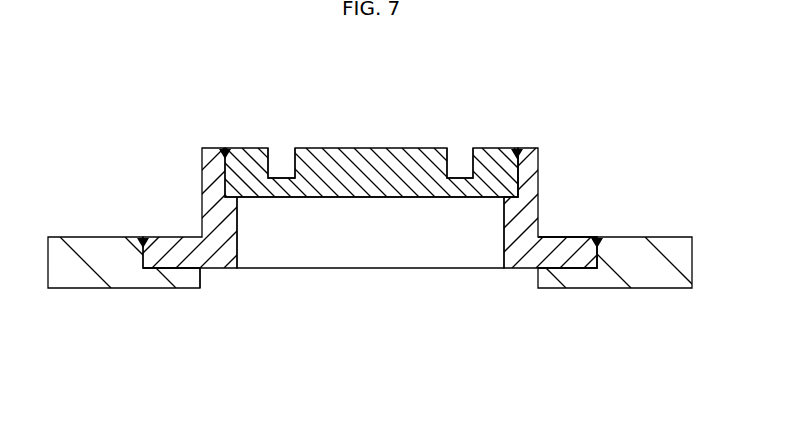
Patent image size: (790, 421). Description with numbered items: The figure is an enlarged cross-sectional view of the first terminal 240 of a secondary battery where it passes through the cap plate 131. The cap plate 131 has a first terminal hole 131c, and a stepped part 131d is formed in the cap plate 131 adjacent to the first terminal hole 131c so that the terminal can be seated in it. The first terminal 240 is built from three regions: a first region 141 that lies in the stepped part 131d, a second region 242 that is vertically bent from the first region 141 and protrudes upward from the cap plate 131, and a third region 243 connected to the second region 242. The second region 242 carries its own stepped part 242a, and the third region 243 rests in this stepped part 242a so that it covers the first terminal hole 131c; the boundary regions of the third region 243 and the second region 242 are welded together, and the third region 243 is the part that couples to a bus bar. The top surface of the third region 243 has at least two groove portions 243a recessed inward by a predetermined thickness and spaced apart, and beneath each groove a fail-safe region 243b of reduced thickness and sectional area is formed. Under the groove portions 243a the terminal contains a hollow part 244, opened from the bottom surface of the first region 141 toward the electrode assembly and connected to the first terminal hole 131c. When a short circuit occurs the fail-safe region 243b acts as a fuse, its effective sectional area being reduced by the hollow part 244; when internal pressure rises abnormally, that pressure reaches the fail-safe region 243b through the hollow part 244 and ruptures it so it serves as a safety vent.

The first terminal 240 is at (368, 206).
The second region 242 is at (533, 172).
The stepped part 242a is at (493, 178).
The third region 243 is at (370, 148).
The groove portion 243a is at (286, 158).
The fail-safe region 243b is at (458, 170).
The hollow part 244 is at (385, 244).
The first region 141 is at (580, 247).
The cap plate 131 is at (665, 247).
The first terminal hole 131c is at (203, 277).
The stepped part 131d is at (175, 275).